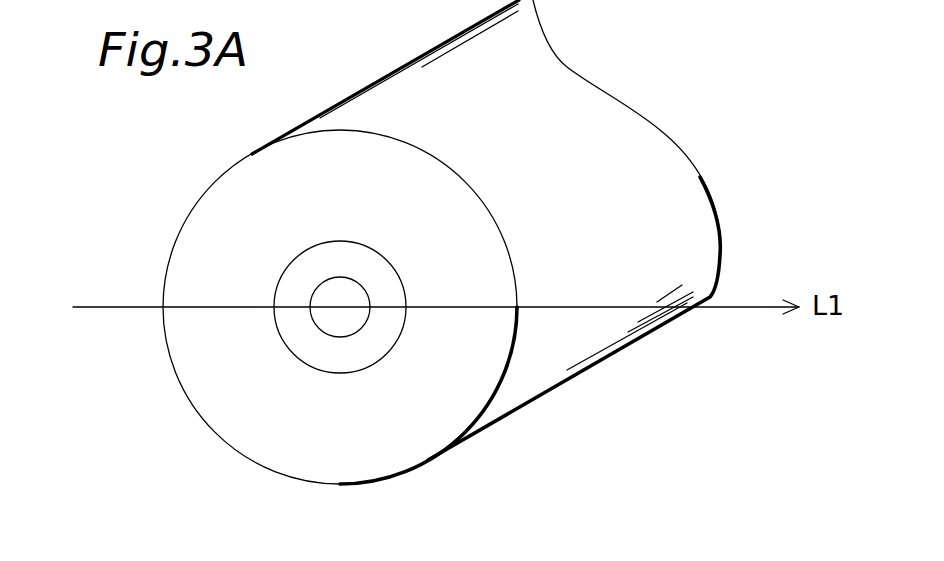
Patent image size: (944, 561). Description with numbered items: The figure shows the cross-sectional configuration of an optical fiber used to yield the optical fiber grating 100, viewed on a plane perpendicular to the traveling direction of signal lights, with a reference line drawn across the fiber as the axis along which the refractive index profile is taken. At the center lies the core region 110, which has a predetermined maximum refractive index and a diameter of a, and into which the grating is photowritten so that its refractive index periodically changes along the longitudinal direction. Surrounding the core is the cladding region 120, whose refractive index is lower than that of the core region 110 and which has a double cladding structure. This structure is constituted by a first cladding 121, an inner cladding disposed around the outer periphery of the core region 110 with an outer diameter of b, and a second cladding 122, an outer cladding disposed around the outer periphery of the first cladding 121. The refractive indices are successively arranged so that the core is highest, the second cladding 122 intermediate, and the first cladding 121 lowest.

The optical fiber grating 100 is at (640, 146).
The core region 110 is at (358, 313).
The cladding region 120 is at (278, 307).
The first cladding 121 is at (203, 211).
The second cladding 122 is at (287, 291).